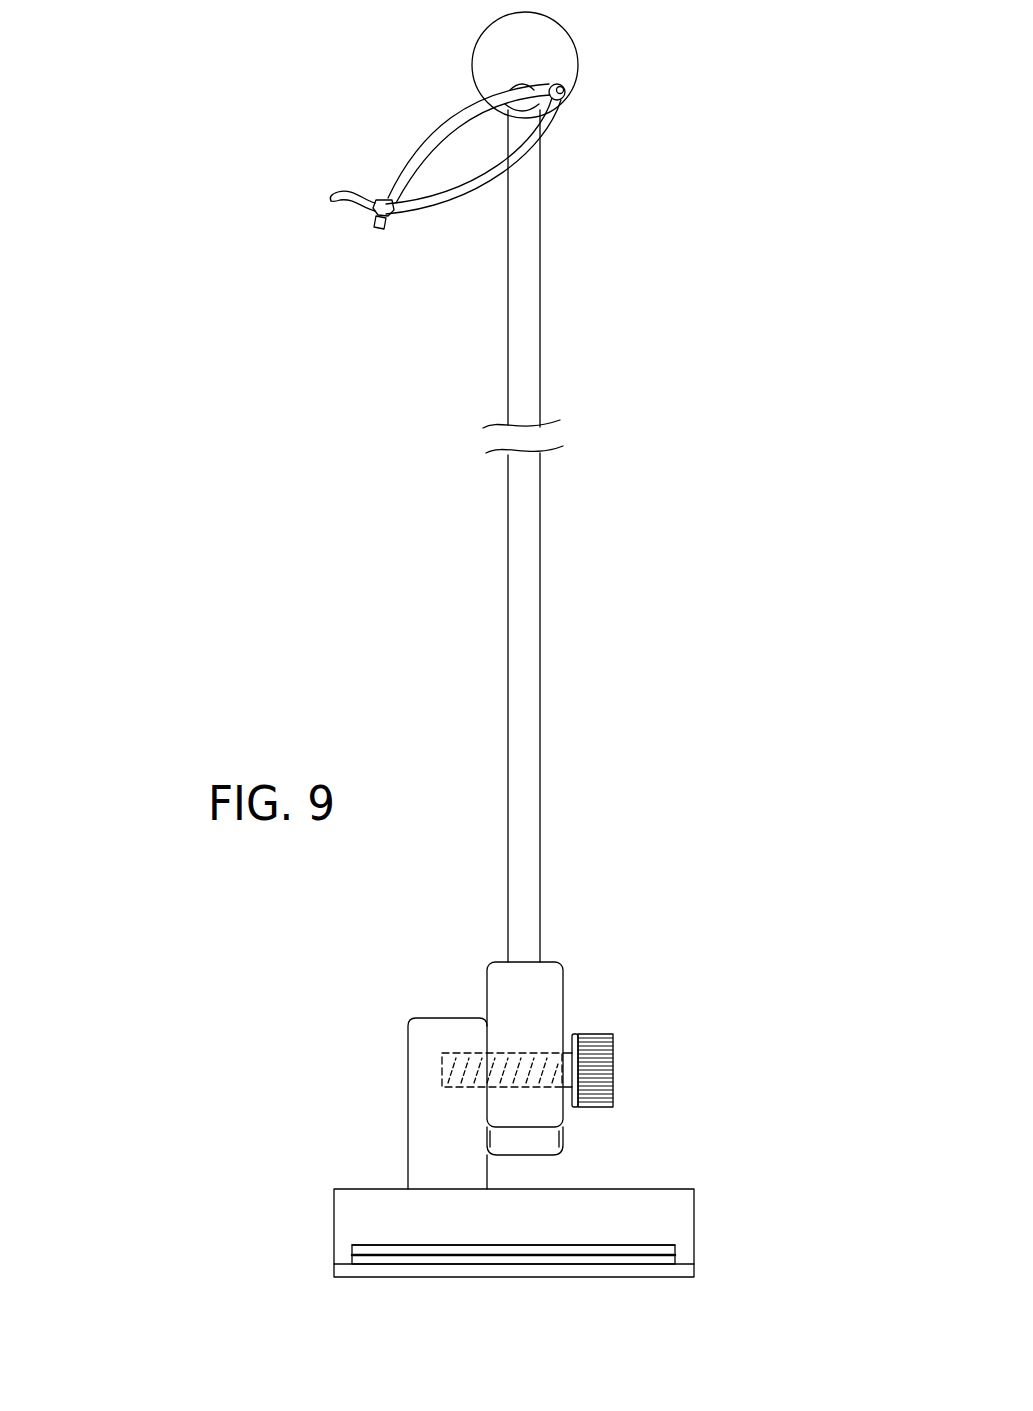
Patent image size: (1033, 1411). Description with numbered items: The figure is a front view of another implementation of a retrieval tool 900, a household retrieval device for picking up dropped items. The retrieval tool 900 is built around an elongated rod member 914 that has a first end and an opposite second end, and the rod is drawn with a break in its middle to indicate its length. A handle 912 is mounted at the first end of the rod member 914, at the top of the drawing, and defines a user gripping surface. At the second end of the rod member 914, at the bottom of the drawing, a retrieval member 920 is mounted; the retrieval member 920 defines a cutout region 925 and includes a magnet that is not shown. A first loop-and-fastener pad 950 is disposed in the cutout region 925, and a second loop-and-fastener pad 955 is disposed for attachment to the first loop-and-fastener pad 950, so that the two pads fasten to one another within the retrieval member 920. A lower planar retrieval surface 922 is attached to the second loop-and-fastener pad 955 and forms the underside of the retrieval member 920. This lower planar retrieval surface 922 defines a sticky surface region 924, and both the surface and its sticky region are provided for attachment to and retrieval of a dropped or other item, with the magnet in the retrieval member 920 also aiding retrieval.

The retrieval tool 900 is at (95, 98).
The handle 912 is at (577, 72).
The elongated rod member 914 is at (508, 341).
The retrieval member 920 is at (745, 1197).
The lower planar retrieval surface 922 is at (472, 1270).
The sticky surface region 924 is at (665, 1278).
The cutout region 925 is at (680, 1255).
The first loop-and-fastener pad 950 is at (373, 1248).
The second loop-and-fastener pad 955 is at (362, 1260).